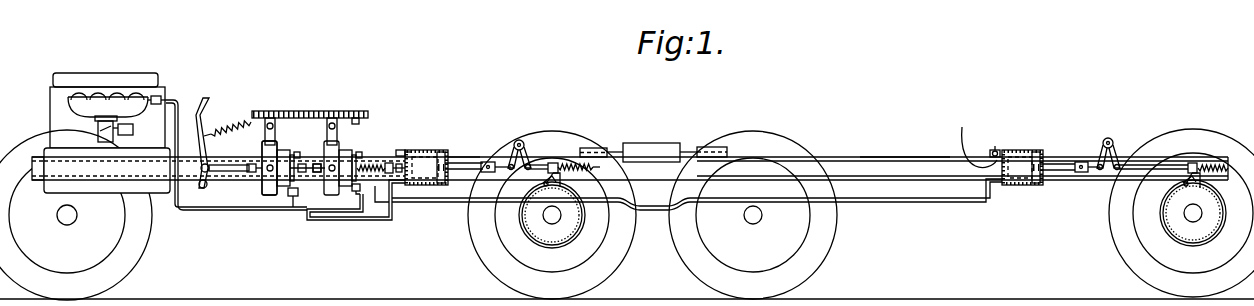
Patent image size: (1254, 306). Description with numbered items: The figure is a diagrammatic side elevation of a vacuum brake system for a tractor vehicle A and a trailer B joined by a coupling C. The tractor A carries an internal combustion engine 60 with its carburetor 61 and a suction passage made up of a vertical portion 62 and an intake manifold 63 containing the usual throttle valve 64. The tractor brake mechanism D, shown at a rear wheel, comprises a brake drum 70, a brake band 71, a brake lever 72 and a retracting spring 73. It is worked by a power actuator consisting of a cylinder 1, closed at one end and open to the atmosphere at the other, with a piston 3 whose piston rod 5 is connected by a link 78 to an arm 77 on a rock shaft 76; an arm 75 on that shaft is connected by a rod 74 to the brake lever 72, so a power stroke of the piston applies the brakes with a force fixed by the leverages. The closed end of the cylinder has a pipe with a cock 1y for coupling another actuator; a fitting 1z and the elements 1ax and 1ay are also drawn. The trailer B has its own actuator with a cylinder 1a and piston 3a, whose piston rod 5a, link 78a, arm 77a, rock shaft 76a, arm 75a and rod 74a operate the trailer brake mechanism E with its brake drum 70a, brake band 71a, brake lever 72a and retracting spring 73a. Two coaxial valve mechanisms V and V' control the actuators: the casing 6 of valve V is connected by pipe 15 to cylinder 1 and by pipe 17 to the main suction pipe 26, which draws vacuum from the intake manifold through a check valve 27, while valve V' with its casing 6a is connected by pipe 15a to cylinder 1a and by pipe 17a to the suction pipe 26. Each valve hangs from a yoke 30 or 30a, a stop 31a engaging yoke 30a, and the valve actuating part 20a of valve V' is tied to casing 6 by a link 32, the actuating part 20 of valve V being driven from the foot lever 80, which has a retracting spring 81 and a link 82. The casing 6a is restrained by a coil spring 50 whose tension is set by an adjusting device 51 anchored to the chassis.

The cylinder 1 is at (428, 150).
The cylinder 1a is at (1013, 150).
The cock 1y is at (402, 151).
The cylinder head 1z is at (410, 152).
The rear cylinder inlet valve 1ax is at (999, 150).
The rear cylinder inlet pipe 1ay is at (978, 134).
The piston 3 is at (437, 187).
The piston 3a is at (1037, 151).
The piston rod 5 is at (464, 163).
The piston rod 5a is at (1053, 178).
The casing 6 is at (262, 146).
The valve casing 6a is at (345, 148).
The pipe 15 is at (318, 222).
The pipe 15a is at (927, 196).
The pipe 17 is at (290, 205).
The pipe 17a is at (364, 214).
The valve actuating part 20 is at (252, 173).
The valve actuating part 20a is at (318, 178).
The main suction pipe 26 is at (178, 212).
The check valve 27 is at (165, 97).
The yoke 30 is at (265, 140).
The yoke 30a is at (323, 124).
The stop 31a is at (356, 118).
The link 32 is at (295, 160).
The coil spring 50 is at (373, 148).
The adjusting device 51 is at (373, 163).
The internal combustion engine 60 is at (104, 78).
The carburetor 61 is at (133, 129).
The vertical portion 62 is at (99, 118).
The intake manifold 63 is at (54, 88).
The throttle valve 64 is at (100, 131).
The brake drum 70 is at (527, 239).
The brake drum 70a is at (1173, 238).
The brake band 71 is at (523, 229).
The brake band 71a is at (1168, 230).
The brake lever 72 is at (540, 184).
The brake lever 72a is at (1180, 181).
The retracting spring 73 is at (577, 158).
The retracting spring 73a is at (1208, 162).
The rod 74 is at (555, 163).
The rod 74a is at (1190, 163).
The arm 75 is at (532, 163).
The arm 75a is at (1145, 164).
The rock shaft 76 is at (524, 140).
The rock shaft 76a is at (1118, 162).
The arm 77 is at (513, 142).
The arm 77a is at (1109, 140).
The link 78 is at (496, 162).
The link 78a is at (1076, 162).
The foot lever 80 is at (209, 101).
The retracting spring 81 is at (234, 131).
The link 82 is at (227, 172).
The tractor vehicle A is at (462, 158).
The trailer B is at (905, 157).
The coupling C is at (652, 143).
The brake mechanism D is at (552, 215).
The brake mechanism E is at (1150, 212).
The valve mechanism V is at (271, 180).
The valve mechanism V' is at (340, 184).